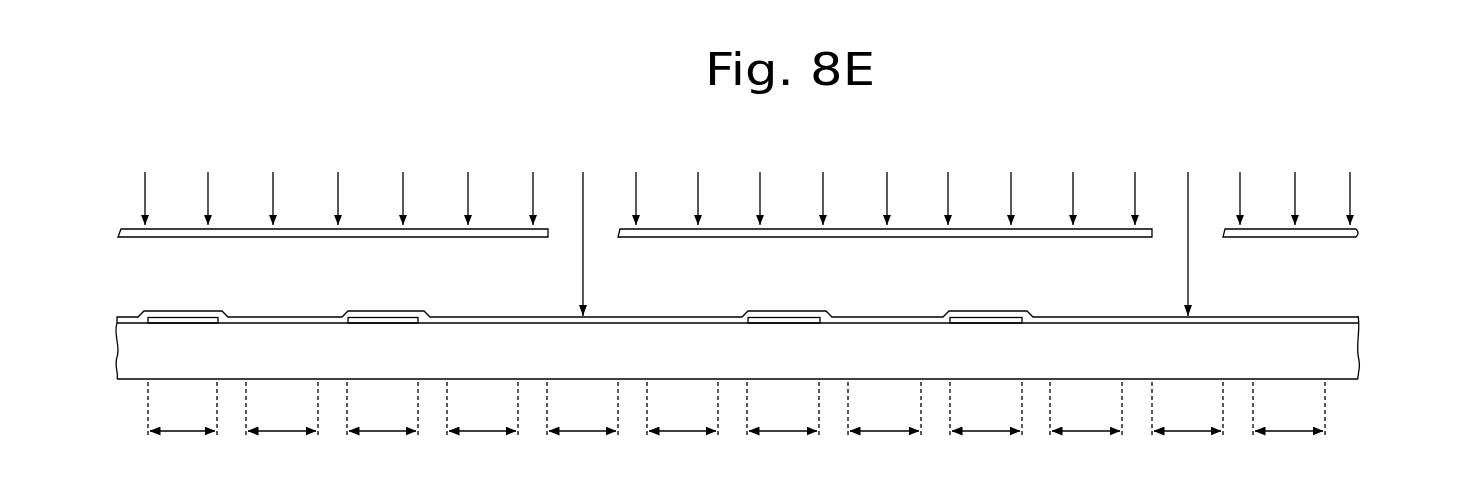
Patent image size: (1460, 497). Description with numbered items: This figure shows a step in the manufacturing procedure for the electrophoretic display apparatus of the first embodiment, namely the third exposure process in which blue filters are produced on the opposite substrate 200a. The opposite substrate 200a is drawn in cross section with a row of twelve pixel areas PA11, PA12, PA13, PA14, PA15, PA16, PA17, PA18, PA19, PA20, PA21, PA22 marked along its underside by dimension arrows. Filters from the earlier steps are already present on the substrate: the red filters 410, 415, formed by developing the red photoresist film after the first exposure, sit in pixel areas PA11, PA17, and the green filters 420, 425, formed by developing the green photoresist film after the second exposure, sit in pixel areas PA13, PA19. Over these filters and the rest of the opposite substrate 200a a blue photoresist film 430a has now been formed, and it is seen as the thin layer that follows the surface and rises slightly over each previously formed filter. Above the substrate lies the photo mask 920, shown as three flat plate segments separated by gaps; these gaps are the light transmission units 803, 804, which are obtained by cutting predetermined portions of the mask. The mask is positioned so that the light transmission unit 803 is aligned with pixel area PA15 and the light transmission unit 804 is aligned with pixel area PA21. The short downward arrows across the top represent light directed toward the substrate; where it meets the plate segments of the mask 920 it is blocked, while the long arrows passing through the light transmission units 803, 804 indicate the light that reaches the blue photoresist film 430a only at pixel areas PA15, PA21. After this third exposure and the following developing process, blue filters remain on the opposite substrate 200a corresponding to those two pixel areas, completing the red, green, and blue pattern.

The mask 920 is at (1358, 231).
The first light transmission unit 803 is at (607, 232).
The light transmission unit 804 is at (1210, 232).
The blue photoresist film 430a is at (1358, 316).
The red filter 410 is at (186, 320).
The green filter 420 is at (388, 320).
The red filter 415 is at (788, 320).
The green filter 425 is at (989, 320).
The opposite substrate 200a is at (1347, 353).
The pixel area PA11 is at (182, 422).
The pixel area PA12 is at (282, 422).
The pixel area PA13 is at (382, 422).
The pixel area PA14 is at (482, 422).
The pixel area PA15 is at (582, 422).
The pixel area PA16 is at (682, 422).
The pixel area PA17 is at (783, 422).
The pixel area PA18 is at (884, 422).
The pixel area PA19 is at (986, 422).
The pixel area PA20 is at (1086, 422).
The pixel area PA21 is at (1187, 422).
The pixel area PA22 is at (1289, 422).